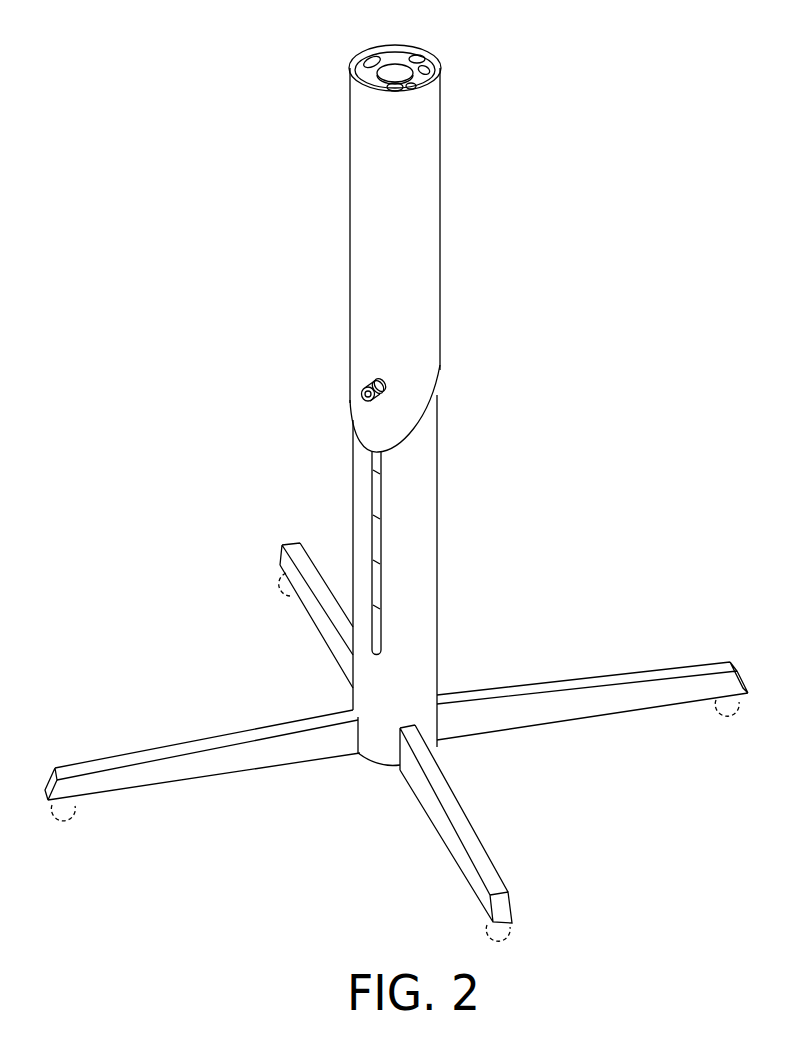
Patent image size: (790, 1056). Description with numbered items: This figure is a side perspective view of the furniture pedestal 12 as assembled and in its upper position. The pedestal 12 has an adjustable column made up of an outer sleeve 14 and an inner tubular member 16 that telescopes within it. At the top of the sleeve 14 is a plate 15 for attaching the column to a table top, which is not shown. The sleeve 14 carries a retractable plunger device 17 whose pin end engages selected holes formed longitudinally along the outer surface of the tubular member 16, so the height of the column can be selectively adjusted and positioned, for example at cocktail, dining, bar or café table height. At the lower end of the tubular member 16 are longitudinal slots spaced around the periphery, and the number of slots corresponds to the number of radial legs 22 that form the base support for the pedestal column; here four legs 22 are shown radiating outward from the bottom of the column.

The furniture pedestal 12 is at (286, 344).
The outer sleeve 14 is at (433, 197).
The plate 15 is at (360, 70).
The inner tubular member 16 is at (433, 503).
The retractable plunger device 17 is at (356, 398).
The radial legs 22 is at (198, 740).